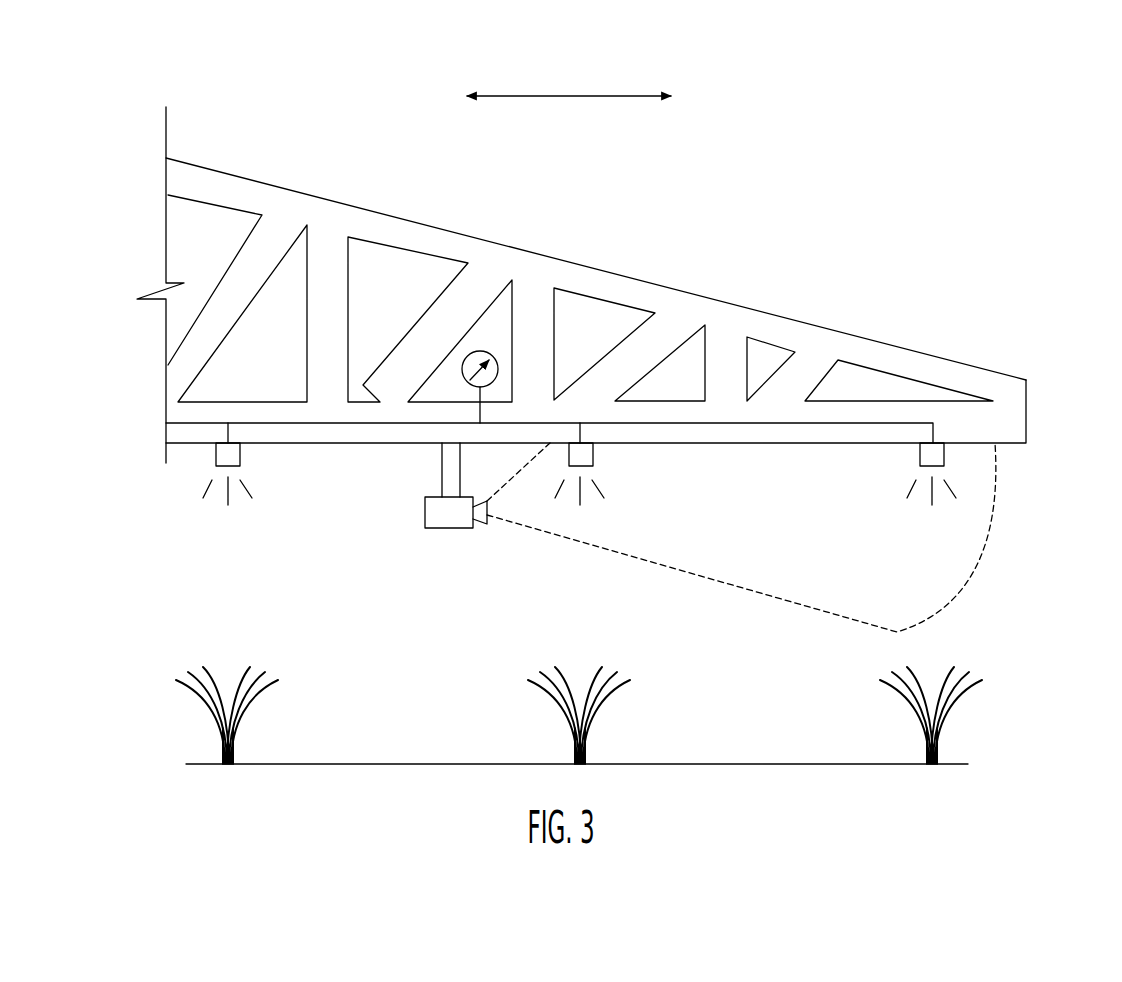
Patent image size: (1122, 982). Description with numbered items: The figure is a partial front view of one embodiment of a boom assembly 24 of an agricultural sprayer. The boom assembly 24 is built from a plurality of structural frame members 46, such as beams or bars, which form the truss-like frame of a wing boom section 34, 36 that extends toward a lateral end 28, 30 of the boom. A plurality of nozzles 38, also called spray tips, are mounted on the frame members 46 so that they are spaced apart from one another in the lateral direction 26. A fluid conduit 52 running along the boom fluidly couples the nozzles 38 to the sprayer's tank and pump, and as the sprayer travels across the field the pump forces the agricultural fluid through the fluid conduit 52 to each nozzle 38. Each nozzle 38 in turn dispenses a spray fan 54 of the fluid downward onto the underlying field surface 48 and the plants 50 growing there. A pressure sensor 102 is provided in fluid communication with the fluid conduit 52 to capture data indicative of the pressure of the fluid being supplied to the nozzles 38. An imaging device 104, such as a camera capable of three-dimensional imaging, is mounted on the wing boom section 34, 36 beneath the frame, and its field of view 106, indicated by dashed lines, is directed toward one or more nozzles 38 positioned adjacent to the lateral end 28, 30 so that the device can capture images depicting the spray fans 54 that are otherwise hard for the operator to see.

The boom assembly 24 is at (242, 76).
The lateral direction 26 is at (593, 98).
The lateral end 28 is at (641, 394).
The lateral end 30 is at (1064, 407).
The wing boom section 34 is at (641, 334).
The wing boom section 36 is at (641, 334).
The nozzle 38 is at (240, 453).
The structural frame member 46 is at (441, 320).
The field surface 48 is at (358, 764).
The plant 50 is at (183, 724).
The fluid conduit 52 is at (763, 423).
The spray fan 54 is at (216, 529).
The pressure sensor 102 is at (498, 360).
The imaging device 104 is at (442, 528).
The field of view 106 is at (718, 582).